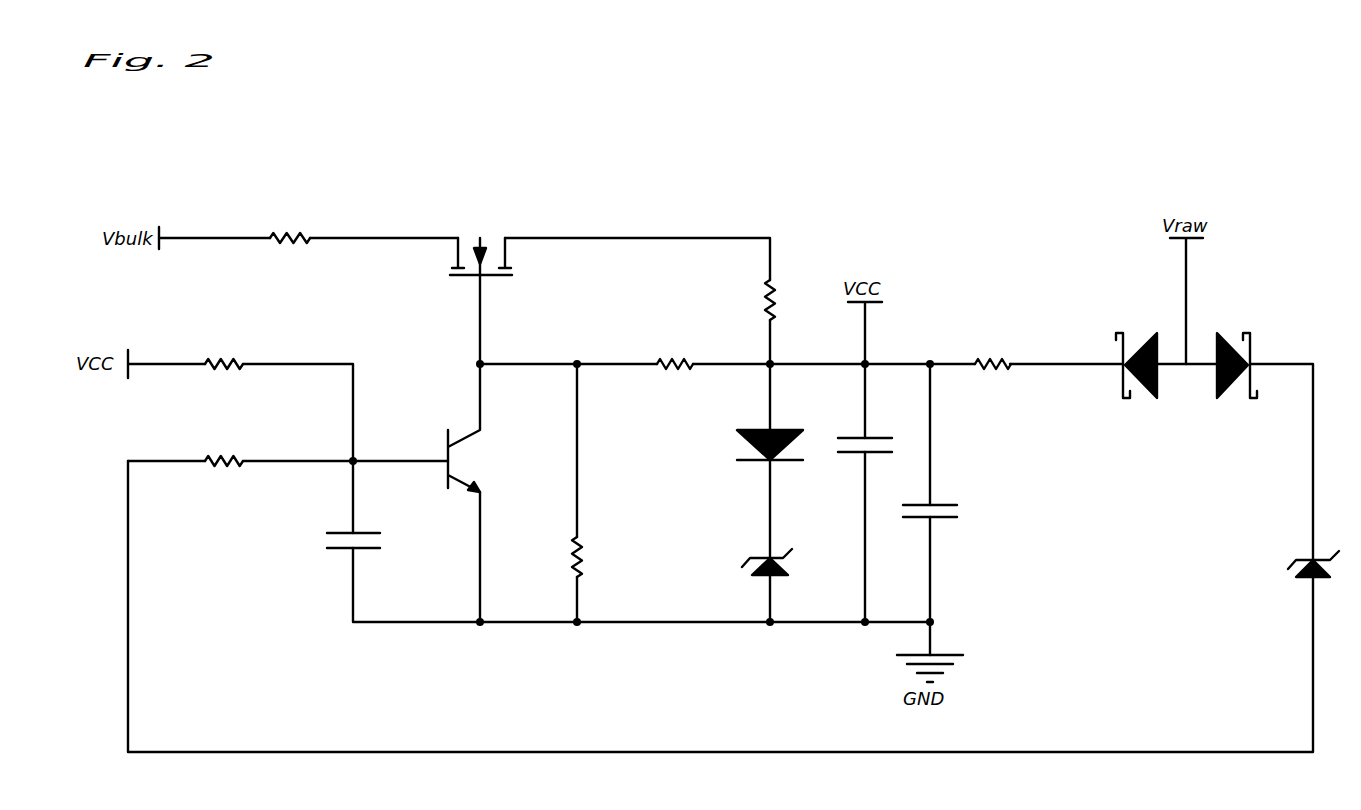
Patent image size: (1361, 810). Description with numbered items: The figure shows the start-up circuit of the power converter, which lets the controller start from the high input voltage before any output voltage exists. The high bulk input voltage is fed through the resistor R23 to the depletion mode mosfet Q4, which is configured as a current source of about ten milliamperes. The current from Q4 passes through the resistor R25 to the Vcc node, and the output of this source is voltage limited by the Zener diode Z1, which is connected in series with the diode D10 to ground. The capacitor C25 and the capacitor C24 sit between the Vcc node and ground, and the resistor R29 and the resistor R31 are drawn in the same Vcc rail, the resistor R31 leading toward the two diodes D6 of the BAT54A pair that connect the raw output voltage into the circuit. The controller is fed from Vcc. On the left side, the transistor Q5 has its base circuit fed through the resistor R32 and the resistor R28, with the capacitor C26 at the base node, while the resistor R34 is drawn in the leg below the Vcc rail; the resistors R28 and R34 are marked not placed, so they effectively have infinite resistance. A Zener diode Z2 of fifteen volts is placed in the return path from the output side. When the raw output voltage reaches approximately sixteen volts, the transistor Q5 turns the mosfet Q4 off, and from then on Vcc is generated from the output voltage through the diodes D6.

The resistor R23 is at (288, 252).
The depletion mode mosfet Q4 is at (481, 242).
The resistor R25 is at (791, 300).
The resistor R29 is at (675, 348).
The resistor R31 is at (991, 375).
The resistor R28 is at (224, 376).
The resistor R32 is at (224, 474).
The capacitor C26 is at (374, 540).
The transistor Q5 is at (476, 493).
The resistor R34 is at (553, 557).
The diode D10 is at (745, 445).
The Zener diode Z1 is at (750, 563).
The capacitor C25 is at (875, 432).
The capacitor C24 is at (950, 511).
The diode D6 is at (1184, 381).
The Zener diode Z2 is at (1297, 564).